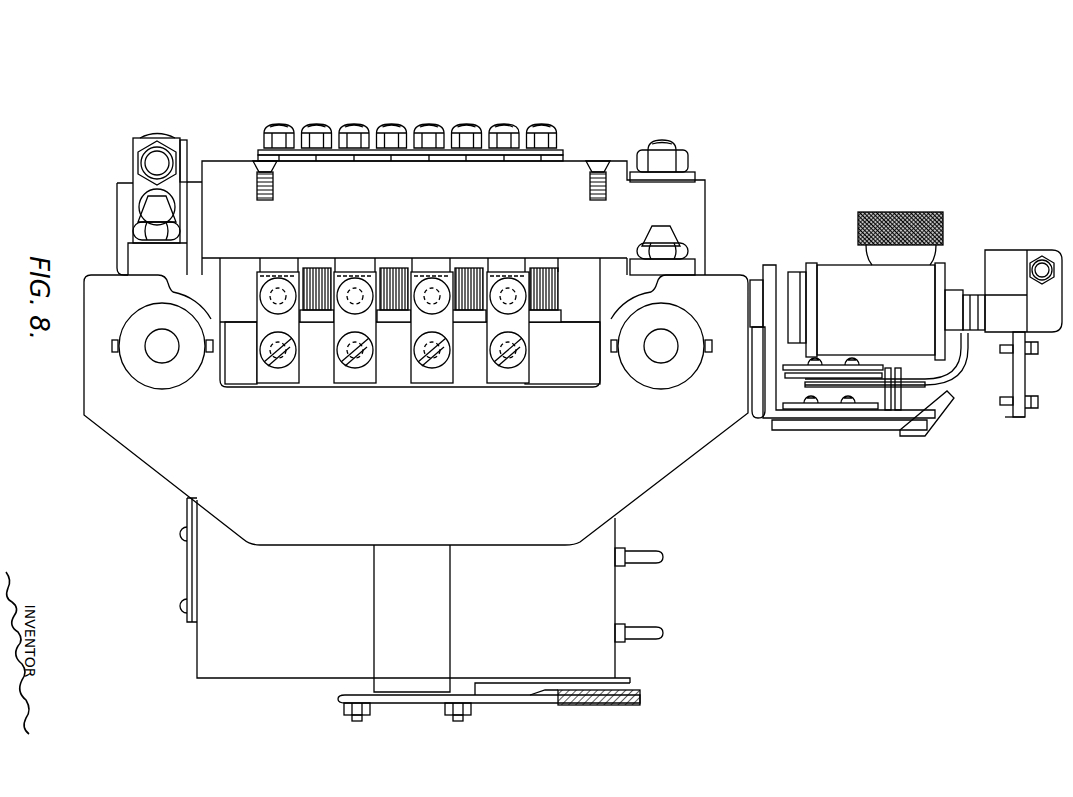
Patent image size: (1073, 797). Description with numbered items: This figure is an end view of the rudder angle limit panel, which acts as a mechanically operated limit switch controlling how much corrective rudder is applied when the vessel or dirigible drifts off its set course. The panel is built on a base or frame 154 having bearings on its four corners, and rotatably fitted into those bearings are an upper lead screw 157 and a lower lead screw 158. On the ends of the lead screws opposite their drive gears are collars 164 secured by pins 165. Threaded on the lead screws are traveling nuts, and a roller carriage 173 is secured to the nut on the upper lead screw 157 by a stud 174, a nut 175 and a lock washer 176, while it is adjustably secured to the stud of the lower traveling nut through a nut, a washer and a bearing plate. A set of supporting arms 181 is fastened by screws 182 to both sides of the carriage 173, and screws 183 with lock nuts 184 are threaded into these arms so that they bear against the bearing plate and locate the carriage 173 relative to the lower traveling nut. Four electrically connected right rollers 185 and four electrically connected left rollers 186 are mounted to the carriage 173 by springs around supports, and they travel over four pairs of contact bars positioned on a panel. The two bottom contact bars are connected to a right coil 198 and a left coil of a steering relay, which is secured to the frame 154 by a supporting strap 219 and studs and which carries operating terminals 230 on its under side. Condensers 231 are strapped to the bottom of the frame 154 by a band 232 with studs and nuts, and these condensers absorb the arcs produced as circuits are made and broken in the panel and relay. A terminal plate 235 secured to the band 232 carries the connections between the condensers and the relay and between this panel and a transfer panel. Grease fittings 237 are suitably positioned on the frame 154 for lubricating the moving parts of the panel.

The base or frame 154 is at (685, 462).
The upper lead screw 157 is at (655, 360).
The lower lead screw 158 is at (170, 357).
The collars 164 is at (113, 350).
The pins 165 is at (148, 338).
The roller carriage 173 is at (446, 218).
The stud 174 is at (657, 147).
The nut 175 is at (690, 155).
The lock washer 176 is at (697, 175).
The supporting arms 181 is at (133, 142).
The screws 182 is at (174, 205).
The screws 183 is at (145, 167).
The lock nuts 184 is at (138, 151).
The right rollers 185 is at (414, 322).
The left rollers 186 is at (410, 189).
The right coil 198 is at (906, 315).
The supporting strap 219 is at (757, 418).
The operating terminals 230 is at (868, 430).
The condensers 231 is at (421, 596).
The band 232 is at (412, 618).
The terminal plate 235 is at (400, 703).
The grease fittings 237 is at (182, 232).